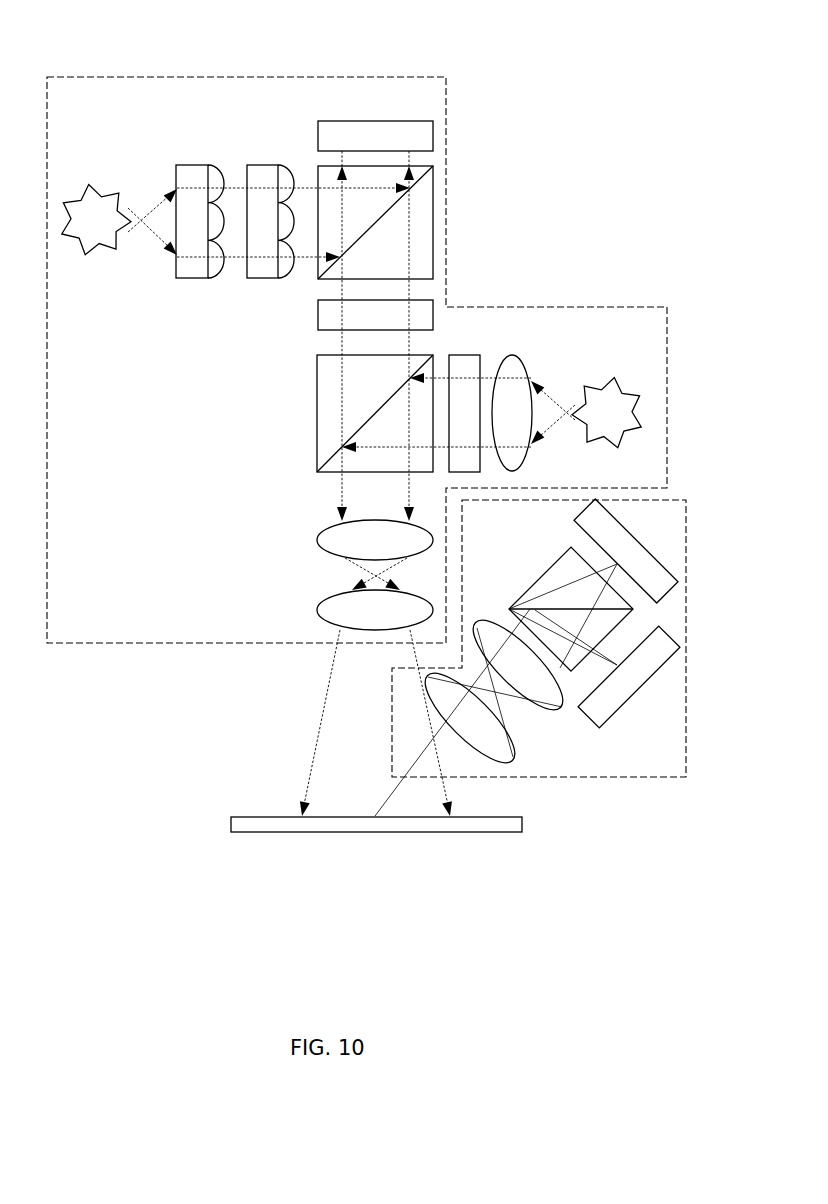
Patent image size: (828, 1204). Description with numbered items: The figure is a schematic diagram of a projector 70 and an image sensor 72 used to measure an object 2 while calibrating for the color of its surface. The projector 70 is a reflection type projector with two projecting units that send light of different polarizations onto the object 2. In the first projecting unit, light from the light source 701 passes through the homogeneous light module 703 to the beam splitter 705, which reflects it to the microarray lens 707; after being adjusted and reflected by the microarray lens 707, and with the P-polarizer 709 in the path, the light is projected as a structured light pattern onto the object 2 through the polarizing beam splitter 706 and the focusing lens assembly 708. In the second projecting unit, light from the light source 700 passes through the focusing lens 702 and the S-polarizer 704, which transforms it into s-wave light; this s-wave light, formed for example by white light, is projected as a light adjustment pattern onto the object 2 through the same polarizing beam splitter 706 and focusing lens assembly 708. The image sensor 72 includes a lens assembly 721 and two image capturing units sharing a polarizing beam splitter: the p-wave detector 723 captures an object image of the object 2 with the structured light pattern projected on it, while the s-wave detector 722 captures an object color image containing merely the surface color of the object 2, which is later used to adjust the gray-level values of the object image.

The object 2 is at (490, 833).
The projector 70 is at (78, 77).
The image sensor 72 is at (686, 520).
The light source 700 is at (620, 370).
The light source 701 is at (97, 183).
The focusing lens 702 is at (528, 368).
The homogeneous light module 703 is at (294, 160).
The S-polarizer 704 is at (464, 355).
The beam splitter 705 is at (327, 284).
The polarizing beam splitter 706 is at (317, 458).
The microarray lens 707 is at (318, 121).
The focusing lens assembly 708 is at (327, 597).
The P-polarizer 709 is at (320, 331).
The lens assembly 721 is at (512, 753).
The s-wave detector 722 is at (626, 703).
The p-wave detector 723 is at (574, 512).